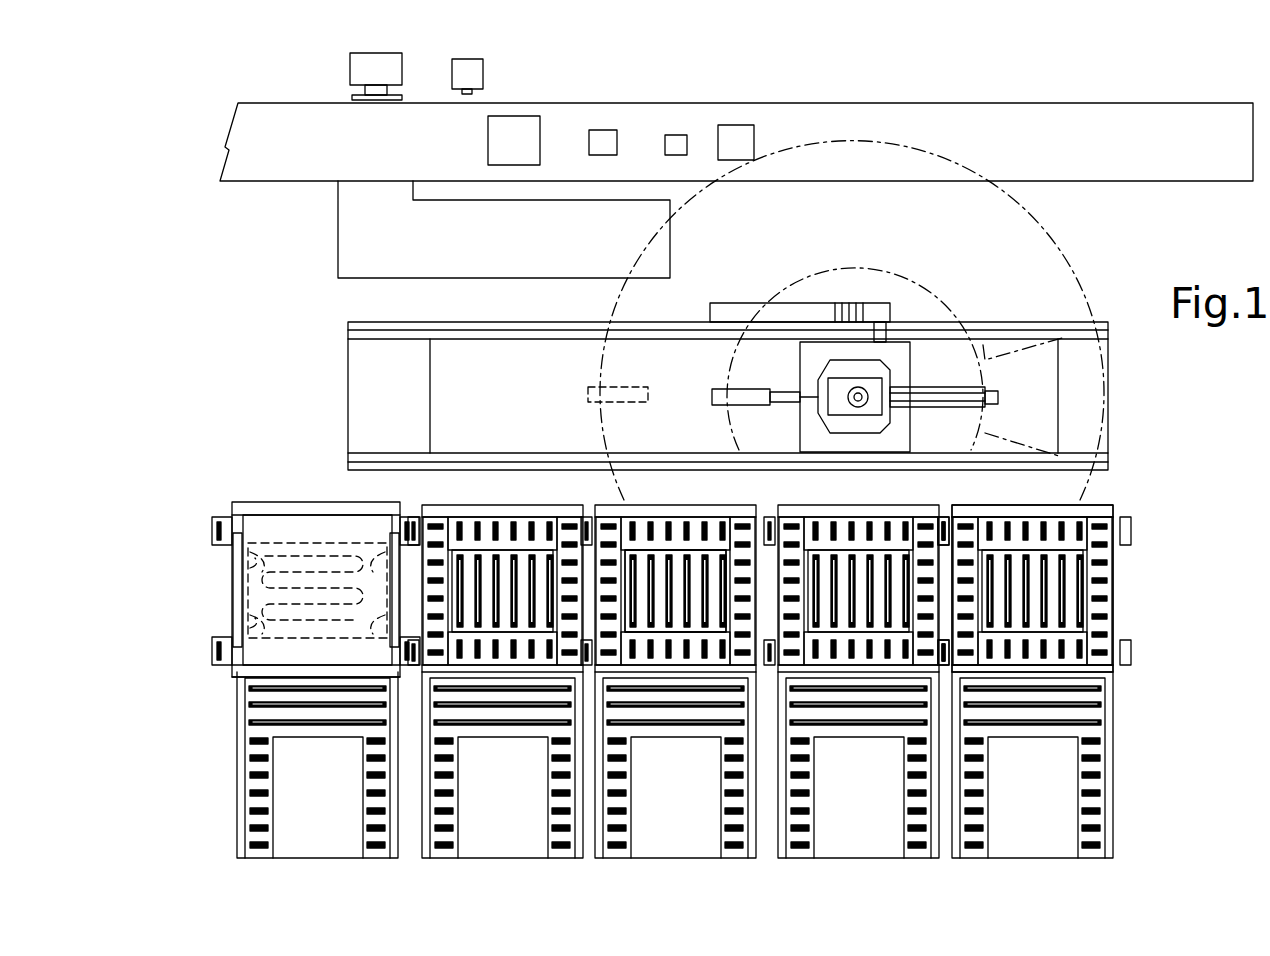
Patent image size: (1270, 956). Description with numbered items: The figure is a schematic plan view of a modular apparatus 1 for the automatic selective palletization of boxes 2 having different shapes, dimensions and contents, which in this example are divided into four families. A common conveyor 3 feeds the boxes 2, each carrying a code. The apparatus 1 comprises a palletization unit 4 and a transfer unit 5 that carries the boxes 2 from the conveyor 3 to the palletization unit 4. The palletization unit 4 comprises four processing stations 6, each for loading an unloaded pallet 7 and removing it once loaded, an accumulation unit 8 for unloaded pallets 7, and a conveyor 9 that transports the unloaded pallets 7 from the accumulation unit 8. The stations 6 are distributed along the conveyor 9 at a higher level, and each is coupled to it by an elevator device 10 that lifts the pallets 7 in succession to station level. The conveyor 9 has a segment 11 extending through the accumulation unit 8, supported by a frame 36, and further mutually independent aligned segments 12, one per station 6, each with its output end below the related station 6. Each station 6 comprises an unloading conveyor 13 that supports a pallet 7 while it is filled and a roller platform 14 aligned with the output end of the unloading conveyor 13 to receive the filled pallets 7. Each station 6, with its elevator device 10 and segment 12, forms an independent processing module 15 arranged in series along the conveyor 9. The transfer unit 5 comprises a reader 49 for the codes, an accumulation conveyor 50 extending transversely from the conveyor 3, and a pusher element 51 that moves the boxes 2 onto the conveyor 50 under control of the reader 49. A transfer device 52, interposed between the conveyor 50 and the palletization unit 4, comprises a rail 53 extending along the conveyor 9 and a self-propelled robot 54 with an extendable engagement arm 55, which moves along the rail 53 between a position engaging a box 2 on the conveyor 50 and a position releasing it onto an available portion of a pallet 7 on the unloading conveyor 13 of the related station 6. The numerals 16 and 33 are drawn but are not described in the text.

The modular apparatus 1 is at (262, 415).
The boxes 2 is at (516, 146).
The common conveyor 3 is at (1041, 135).
The palletization unit 4 is at (1137, 645).
The transfer unit 5 is at (1134, 411).
The processing stations 6 is at (518, 531).
The pallets 7 is at (268, 531).
The accumulation unit 8 is at (216, 581).
The conveyor 9 is at (672, 612).
The elevator device 10 is at (503, 637).
The segment 11 is at (296, 516).
The segments 12 is at (479, 529).
The unloading conveyor 13 is at (586, 605).
The roller platform 14 is at (589, 771).
The processing module 15 is at (497, 492).
The side rail 16 is at (433, 526).
The station legs 33 is at (231, 747).
The frame 36 is at (329, 511).
The reader 49 is at (470, 78).
The accumulation conveyor 50 is at (658, 268).
The pusher element 51 is at (388, 76).
The transfer device 52 is at (988, 310).
The rail 53 is at (1073, 326).
The self-propelled robot 54 is at (916, 370).
The extendable engagement arm 55 is at (626, 393).